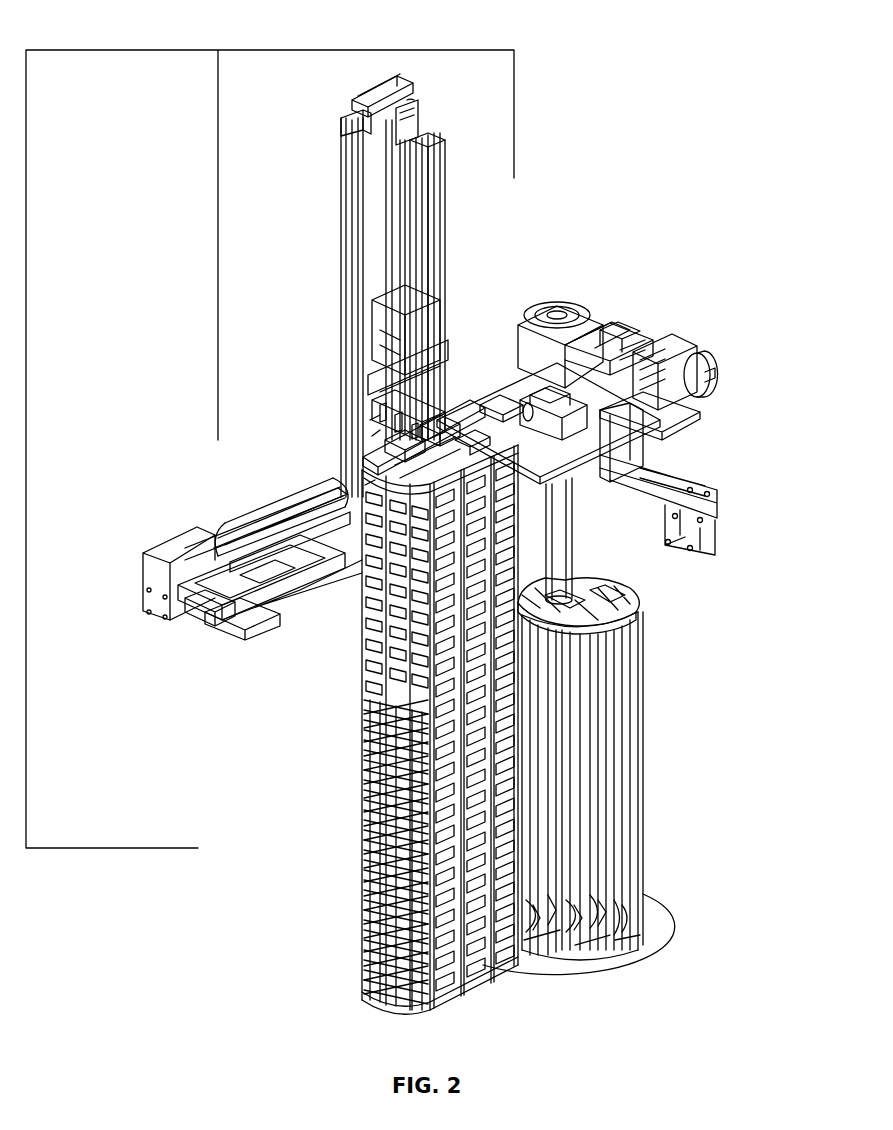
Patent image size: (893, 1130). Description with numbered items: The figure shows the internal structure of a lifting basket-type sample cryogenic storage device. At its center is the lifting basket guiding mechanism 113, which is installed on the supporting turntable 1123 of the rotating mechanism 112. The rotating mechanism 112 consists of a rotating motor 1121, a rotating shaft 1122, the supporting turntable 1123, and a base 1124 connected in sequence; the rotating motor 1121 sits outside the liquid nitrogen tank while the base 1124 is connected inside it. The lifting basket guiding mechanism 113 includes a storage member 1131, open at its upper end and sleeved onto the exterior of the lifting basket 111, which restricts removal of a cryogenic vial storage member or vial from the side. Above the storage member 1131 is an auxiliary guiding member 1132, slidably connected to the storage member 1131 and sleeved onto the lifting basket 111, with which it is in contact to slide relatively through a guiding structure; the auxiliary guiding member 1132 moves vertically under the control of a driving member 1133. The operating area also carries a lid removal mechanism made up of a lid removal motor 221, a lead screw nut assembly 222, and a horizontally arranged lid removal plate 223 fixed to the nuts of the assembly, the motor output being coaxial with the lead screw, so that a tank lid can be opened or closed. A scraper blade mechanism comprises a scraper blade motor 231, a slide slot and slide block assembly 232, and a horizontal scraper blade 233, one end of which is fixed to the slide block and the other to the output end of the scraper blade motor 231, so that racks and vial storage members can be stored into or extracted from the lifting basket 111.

The lifting basket guiding mechanism 113 is at (256, 50).
The driving member 1133 is at (440, 223).
The auxiliary guiding member 1132 is at (337, 470).
The storage member 1131 is at (365, 822).
The lifting basket 111 is at (363, 643).
The rotating mechanism 112 is at (640, 612).
The rotating motor 1121 is at (677, 365).
The rotating shaft 1122 is at (568, 567).
The supporting turntable 1123 is at (640, 810).
The base 1124 is at (662, 937).
The lid removal motor 221 is at (605, 340).
The lead screw nut assembly 222 is at (525, 413).
The lid removal plate 223 is at (668, 428).
The scraper blade motor 231 is at (177, 550).
The slide slot and slide block assembly 232 is at (270, 518).
The scraper blade 233 is at (207, 612).